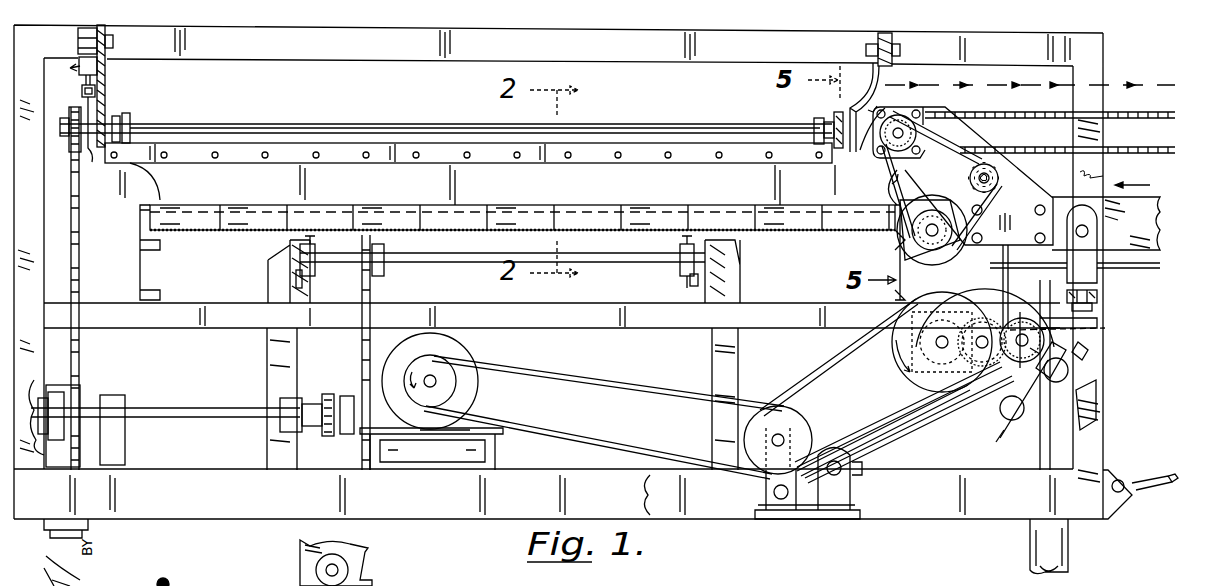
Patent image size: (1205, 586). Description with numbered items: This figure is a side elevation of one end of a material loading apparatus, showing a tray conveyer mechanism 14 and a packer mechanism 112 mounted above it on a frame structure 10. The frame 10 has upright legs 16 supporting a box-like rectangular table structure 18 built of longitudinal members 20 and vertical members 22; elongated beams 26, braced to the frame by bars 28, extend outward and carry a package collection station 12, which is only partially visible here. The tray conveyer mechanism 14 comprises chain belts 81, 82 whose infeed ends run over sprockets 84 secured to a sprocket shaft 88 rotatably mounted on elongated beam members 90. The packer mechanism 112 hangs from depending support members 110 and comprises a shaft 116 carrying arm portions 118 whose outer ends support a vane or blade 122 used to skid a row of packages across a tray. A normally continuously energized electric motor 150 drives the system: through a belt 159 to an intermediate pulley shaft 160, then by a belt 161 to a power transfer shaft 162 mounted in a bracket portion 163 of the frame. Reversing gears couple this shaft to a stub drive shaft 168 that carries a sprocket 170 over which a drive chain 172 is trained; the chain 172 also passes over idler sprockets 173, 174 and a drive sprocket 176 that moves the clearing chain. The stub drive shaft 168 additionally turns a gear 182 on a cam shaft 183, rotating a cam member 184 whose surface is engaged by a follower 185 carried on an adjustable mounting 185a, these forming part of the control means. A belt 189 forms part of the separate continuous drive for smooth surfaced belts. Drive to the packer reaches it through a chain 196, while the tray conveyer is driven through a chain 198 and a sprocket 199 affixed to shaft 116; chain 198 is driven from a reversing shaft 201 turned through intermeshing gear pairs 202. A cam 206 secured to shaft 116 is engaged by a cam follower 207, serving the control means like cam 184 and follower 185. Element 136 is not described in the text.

The frame structure 10 is at (233, 539).
The package collection station 12 is at (1166, 278).
The tray conveyer mechanism 14 is at (746, 254).
The upright legs 16 is at (88, 528).
The table structure 18 is at (1127, 68).
The longitudinal members 20 is at (362, 70).
The vertical members 22 is at (1108, 98).
The elongated beams 26 is at (1106, 240).
The bars 28 is at (1140, 495).
The chain belt 81 is at (306, 287).
The chain belt 82 is at (690, 282).
The sprockets 84 is at (320, 270).
The sprocket shaft 88 is at (448, 258).
The beam members 90 is at (290, 245).
The depending support members 110 is at (106, 78).
The packer mechanism 112 is at (396, 570).
The shaft 116 is at (258, 126).
The arm portions 118 is at (130, 118).
The vane or blade 122 is at (468, 171).
The knob 136 is at (208, 577).
The electric motor 150 is at (462, 348).
The belt 159 is at (555, 405).
The intermediate pulley shaft 160 is at (790, 434).
The belt 161 is at (896, 414).
The power transfer shaft 162 is at (902, 350).
The bracket portion 163 is at (1044, 298).
The stub drive shaft 168 is at (975, 351).
The sprocket 170 is at (973, 340).
The drive chain 172 is at (963, 176).
The idler sprocket 173 is at (880, 238).
The idler sprocket 174 is at (942, 180).
The drive sprocket 176 is at (918, 137).
The gear 182 is at (1040, 318).
The cam shaft 183 is at (1040, 345).
The cam member 184 is at (1078, 326).
The follower 185 is at (1062, 352).
The mounting 185a is at (1098, 412).
The belt 189 is at (930, 416).
The chain 196 is at (84, 220).
The chain 198 is at (372, 290).
The sprocket 199 is at (384, 248).
The reversing shaft 201 is at (198, 410).
The intermeshing gear pairs 202 is at (326, 394).
The cam 206 is at (101, 145).
The cam follower 207 is at (82, 92).